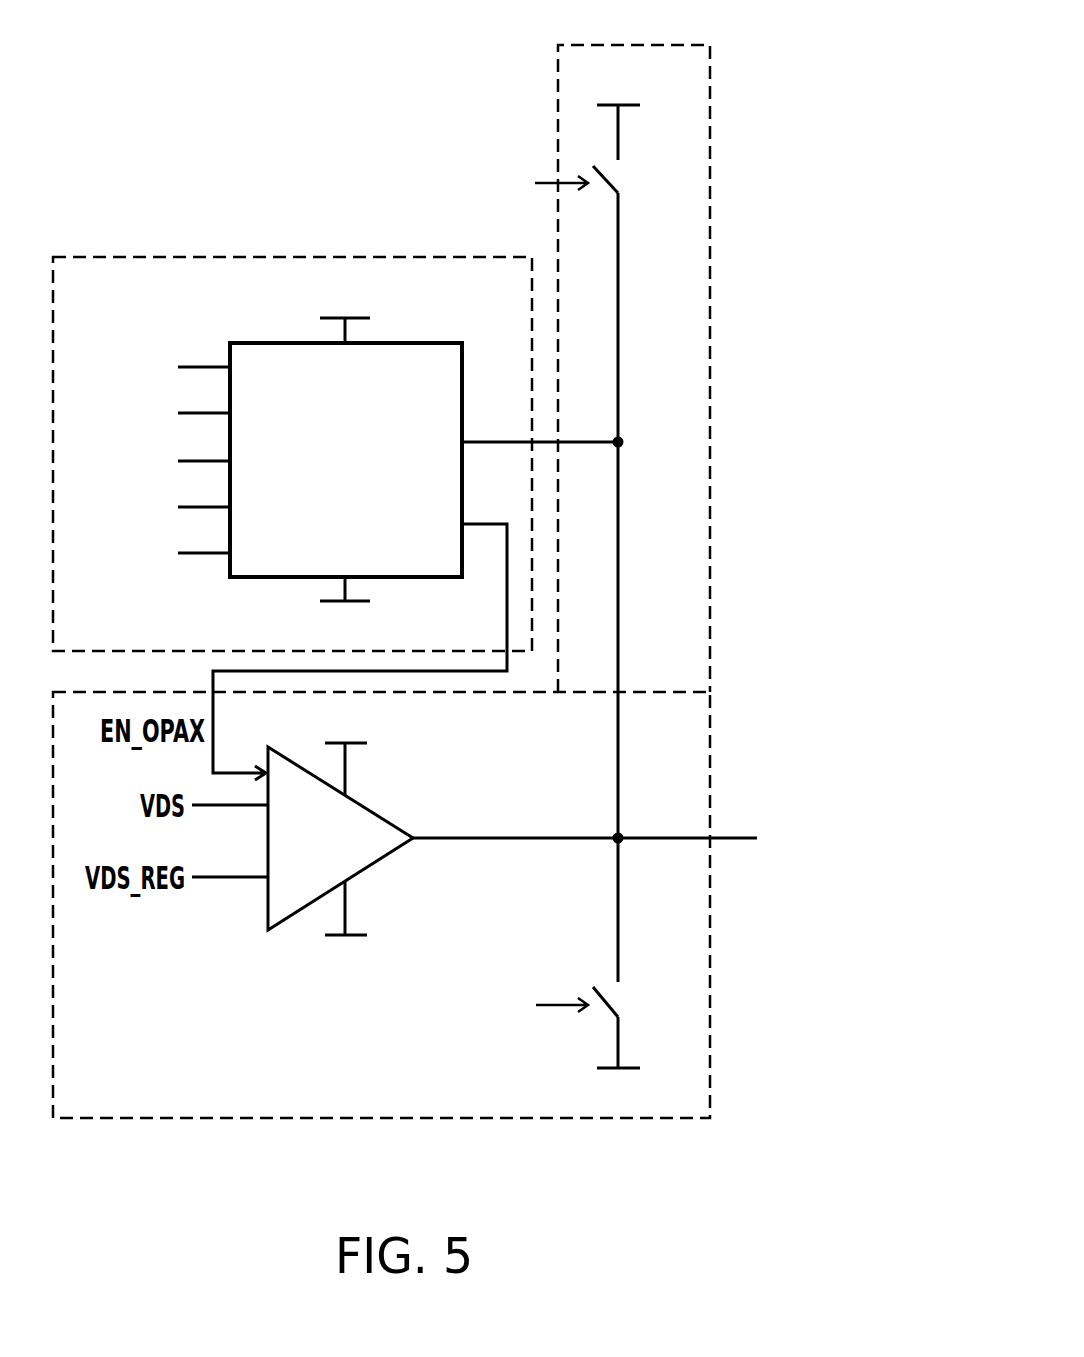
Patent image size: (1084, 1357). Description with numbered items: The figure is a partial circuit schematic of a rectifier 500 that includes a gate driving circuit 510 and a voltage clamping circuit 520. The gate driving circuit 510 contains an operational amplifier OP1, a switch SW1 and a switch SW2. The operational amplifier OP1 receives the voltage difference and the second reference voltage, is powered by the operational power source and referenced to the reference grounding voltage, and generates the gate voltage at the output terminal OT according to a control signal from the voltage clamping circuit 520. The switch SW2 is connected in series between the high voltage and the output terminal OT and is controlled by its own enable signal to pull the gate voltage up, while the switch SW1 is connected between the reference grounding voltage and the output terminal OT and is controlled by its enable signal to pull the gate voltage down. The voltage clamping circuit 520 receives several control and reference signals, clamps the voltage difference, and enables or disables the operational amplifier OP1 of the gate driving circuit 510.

The rectifier 500 is at (817, 1183).
The gate driving circuit 510 is at (645, 45).
The voltage clamping circuit 520 is at (250, 257).
The operational amplifier OP1 is at (373, 808).
The switch SW1 is at (640, 953).
The switch SW2 is at (640, 501).
The output terminal OT is at (623, 834).